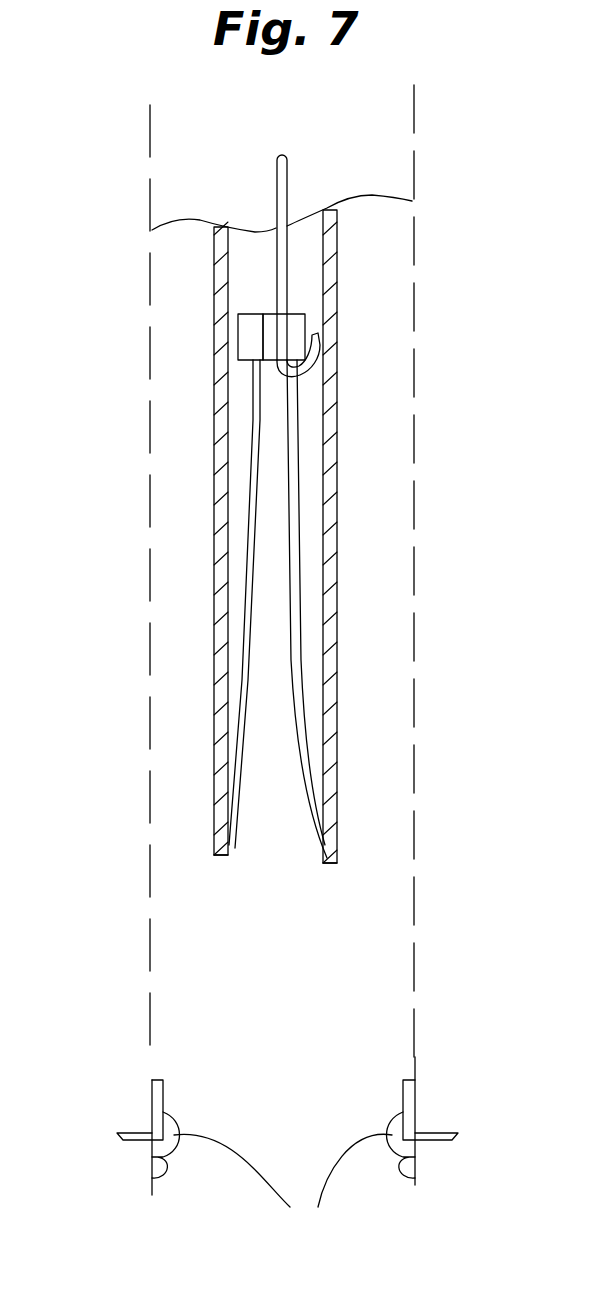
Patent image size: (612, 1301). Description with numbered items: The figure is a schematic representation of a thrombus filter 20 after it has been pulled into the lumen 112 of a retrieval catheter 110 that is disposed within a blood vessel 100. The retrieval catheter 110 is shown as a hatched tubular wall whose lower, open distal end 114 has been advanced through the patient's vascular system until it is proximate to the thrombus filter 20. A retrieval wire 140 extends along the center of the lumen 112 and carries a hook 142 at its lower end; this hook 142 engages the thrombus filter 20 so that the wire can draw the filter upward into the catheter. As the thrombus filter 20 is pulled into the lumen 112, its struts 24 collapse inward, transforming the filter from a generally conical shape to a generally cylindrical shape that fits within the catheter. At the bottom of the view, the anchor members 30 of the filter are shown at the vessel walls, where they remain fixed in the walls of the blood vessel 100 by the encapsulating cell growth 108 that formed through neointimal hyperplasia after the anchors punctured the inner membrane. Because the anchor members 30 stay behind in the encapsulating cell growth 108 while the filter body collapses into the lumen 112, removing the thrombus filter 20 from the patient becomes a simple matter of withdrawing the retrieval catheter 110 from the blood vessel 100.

The thrombus filter 20 is at (245, 476).
The struts 24 is at (292, 629).
The anchor members 30 is at (283, 1180).
The blood vessel 100 is at (418, 1038).
The encapsulating cell growth 108 is at (162, 1175).
The retrieval catheter 110 is at (352, 762).
The lumen 112 is at (305, 268).
The distal end 114 is at (216, 855).
The retrieval wire 140 is at (287, 178).
The hook 142 is at (310, 370).